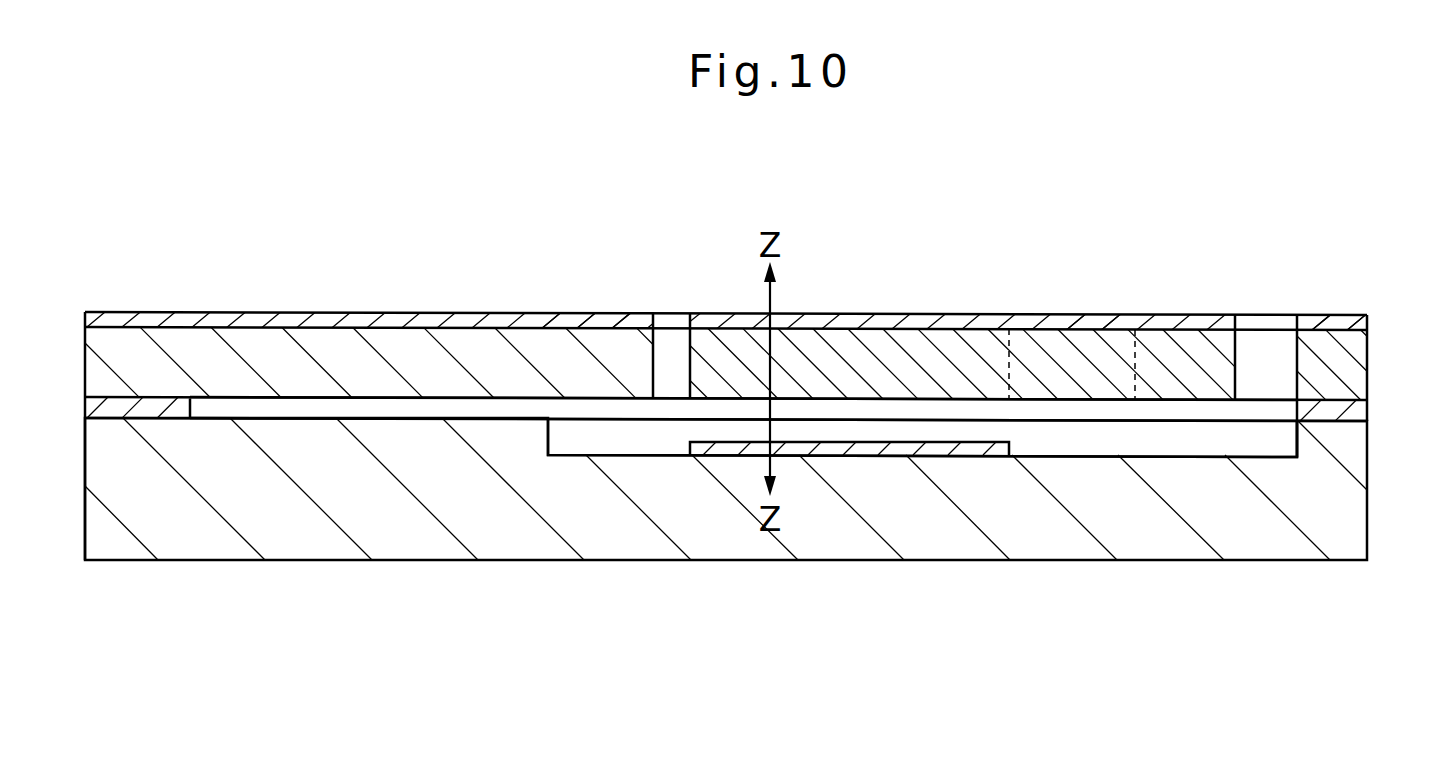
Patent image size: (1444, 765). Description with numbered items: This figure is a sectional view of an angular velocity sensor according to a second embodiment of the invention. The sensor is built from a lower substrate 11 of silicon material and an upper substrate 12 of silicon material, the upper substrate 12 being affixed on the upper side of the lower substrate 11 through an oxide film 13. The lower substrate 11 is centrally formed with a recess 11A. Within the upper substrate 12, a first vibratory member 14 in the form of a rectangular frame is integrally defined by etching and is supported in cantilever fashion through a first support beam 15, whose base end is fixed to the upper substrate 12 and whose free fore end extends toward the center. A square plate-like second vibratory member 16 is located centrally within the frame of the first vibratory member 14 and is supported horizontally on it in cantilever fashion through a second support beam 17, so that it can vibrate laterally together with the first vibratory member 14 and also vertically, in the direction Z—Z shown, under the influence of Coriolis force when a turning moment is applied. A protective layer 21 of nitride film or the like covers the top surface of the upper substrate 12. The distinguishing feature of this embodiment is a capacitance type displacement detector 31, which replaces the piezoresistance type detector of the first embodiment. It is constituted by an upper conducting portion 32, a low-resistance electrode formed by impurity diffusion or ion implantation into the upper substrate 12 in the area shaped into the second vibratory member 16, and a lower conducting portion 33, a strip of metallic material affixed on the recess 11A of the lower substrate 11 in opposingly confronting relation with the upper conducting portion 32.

The lower substrate 11 is at (441, 561).
The recess 11A is at (1102, 457).
The upper substrate 12 is at (318, 312).
The oxide film 13 is at (1353, 413).
The first vibratory member 14 is at (1183, 363).
The first support beam 15 is at (476, 353).
The second vibratory member 16 is at (842, 362).
The second support beam 17 is at (1045, 363).
The protective layer 21 is at (577, 326).
The capacitance type displacement detector 31 is at (713, 400).
The upper conducting portion 32 is at (938, 367).
The lower conducting portion 33 is at (891, 451).